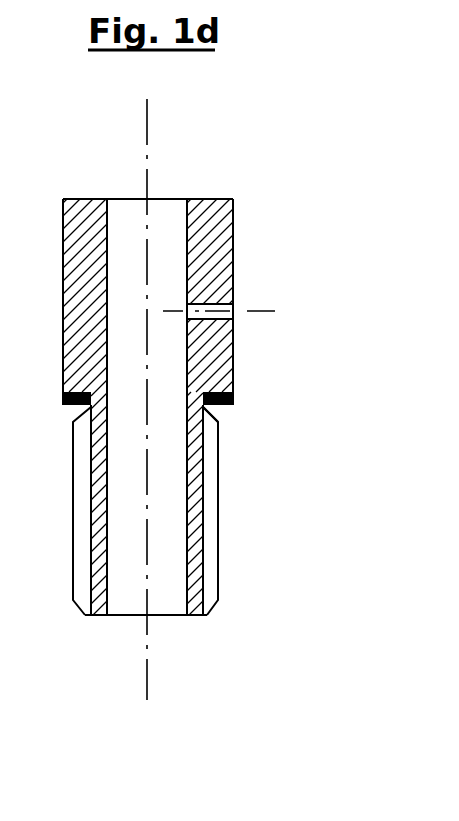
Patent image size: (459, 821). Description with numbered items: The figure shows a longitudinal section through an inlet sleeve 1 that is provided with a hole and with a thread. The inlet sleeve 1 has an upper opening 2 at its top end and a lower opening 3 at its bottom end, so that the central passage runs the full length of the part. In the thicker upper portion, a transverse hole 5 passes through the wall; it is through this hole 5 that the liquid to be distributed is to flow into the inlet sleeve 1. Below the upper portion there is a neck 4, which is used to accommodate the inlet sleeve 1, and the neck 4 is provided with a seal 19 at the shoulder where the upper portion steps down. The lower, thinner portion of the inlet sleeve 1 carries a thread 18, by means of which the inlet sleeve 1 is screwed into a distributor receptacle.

The inlet sleeve 1 is at (232, 221).
The upper opening 2 is at (167, 194).
The lower opening 3 is at (167, 617).
The neck 4 is at (232, 392).
The hole 5 is at (235, 320).
The thread 18 is at (212, 532).
The seal 19 is at (234, 407).